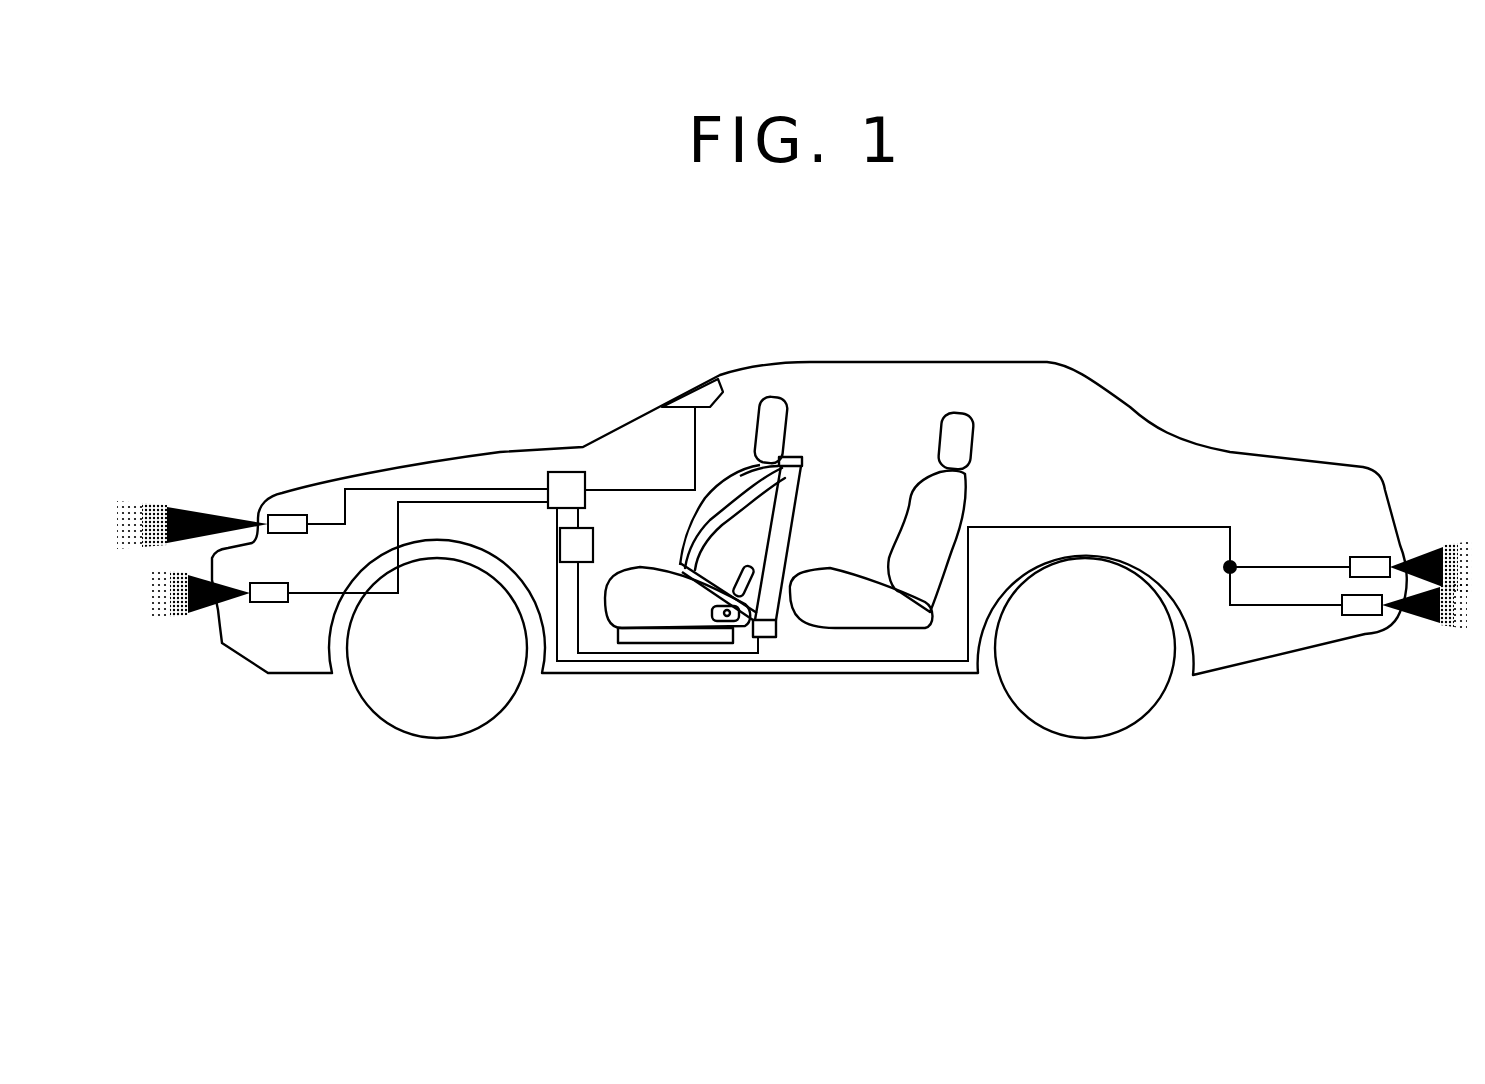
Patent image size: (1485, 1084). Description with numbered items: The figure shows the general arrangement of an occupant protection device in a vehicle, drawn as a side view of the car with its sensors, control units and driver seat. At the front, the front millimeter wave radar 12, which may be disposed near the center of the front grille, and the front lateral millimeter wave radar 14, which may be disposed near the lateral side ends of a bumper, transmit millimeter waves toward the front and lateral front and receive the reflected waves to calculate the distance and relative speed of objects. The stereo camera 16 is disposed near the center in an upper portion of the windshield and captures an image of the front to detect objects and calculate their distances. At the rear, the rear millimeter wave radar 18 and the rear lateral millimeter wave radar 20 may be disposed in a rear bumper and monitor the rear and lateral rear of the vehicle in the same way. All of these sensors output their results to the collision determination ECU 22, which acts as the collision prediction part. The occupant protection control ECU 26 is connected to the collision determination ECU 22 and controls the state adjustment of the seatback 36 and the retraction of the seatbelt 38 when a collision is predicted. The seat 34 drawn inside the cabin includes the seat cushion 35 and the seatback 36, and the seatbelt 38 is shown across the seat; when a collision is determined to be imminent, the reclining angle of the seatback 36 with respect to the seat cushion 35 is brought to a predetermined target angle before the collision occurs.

The front millimeter wave radar 12 is at (268, 603).
The front lateral millimeter wave radar 14 is at (297, 516).
The stereo camera 16 is at (694, 396).
The rear millimeter wave radar 18 is at (1366, 553).
The rear lateral millimeter wave radar 20 is at (1360, 615).
The collision determination ECU 22 is at (568, 472).
The occupant protection control ECU 26 is at (593, 546).
The seat 34 is at (808, 433).
The seat cushion 35 is at (673, 613).
The seatback 36 is at (746, 471).
The seatbelt 38 is at (782, 518).